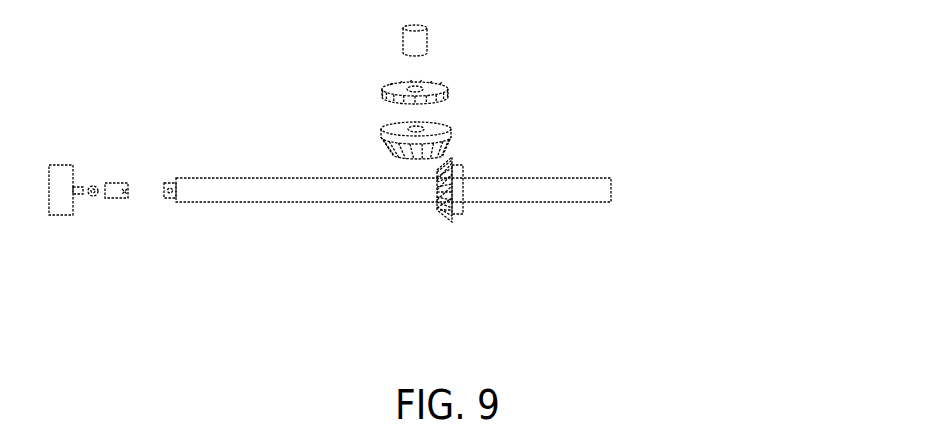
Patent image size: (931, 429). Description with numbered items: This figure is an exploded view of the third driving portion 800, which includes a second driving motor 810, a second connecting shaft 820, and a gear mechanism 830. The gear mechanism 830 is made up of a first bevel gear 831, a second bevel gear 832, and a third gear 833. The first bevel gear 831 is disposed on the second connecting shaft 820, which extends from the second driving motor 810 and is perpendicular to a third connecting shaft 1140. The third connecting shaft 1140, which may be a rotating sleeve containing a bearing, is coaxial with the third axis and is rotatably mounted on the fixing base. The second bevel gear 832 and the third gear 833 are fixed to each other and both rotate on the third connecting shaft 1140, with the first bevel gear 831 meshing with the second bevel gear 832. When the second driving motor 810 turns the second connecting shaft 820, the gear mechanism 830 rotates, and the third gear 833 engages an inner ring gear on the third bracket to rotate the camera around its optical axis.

The third driving portion 800 is at (797, 172).
The second driving motor 810 is at (63, 200).
The second connecting shaft 820 is at (233, 191).
The gear mechanism 830 is at (723, 112).
The first bevel gear 831 is at (453, 200).
The second bevel gear 832 is at (453, 148).
The third gear 833 is at (448, 92).
The third connecting shaft 1140 is at (420, 38).